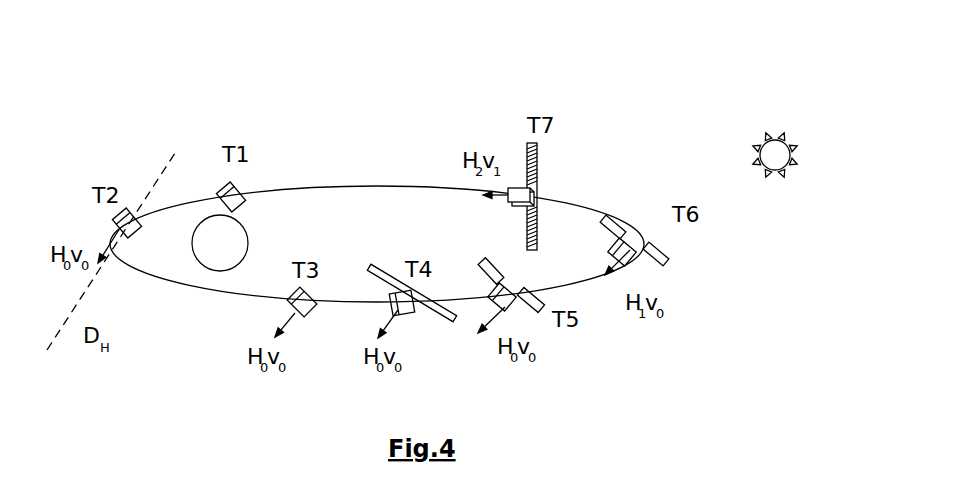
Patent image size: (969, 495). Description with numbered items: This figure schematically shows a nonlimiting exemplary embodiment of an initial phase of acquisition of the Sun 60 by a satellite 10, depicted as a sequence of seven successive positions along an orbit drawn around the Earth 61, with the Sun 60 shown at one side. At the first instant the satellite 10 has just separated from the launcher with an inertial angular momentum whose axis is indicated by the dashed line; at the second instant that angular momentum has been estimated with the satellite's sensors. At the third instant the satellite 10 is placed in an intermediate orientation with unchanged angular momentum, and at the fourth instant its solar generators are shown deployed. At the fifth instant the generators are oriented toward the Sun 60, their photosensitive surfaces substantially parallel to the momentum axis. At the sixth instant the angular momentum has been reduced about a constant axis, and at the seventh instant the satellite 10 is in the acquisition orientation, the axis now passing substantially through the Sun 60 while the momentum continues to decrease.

The satellite 10 is at (237, 181).
The Earth 61 is at (247, 237).
The Sun 60 is at (788, 177).